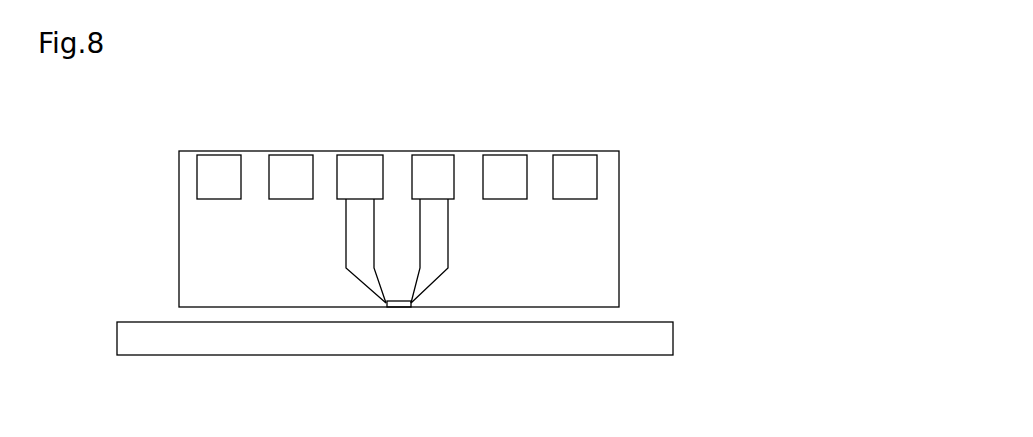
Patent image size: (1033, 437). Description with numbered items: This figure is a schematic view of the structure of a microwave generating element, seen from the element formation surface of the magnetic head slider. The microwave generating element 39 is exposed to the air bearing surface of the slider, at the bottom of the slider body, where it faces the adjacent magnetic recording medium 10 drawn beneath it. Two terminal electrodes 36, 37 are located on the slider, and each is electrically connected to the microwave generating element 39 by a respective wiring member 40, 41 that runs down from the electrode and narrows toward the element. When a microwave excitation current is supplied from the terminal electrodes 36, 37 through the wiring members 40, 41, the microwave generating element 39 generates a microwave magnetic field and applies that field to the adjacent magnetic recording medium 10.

The magnetic recording medium 10 is at (659, 338).
The terminal electrode 36 is at (363, 167).
The terminal electrode 37 is at (432, 166).
The microwave generating element 39 is at (398, 305).
The wiring member 40 is at (357, 239).
The wiring member 41 is at (438, 230).